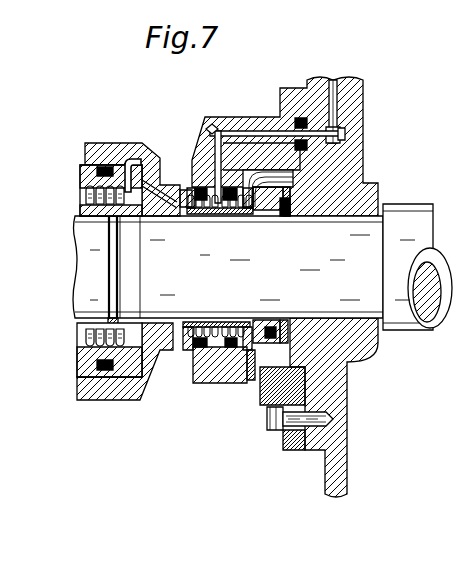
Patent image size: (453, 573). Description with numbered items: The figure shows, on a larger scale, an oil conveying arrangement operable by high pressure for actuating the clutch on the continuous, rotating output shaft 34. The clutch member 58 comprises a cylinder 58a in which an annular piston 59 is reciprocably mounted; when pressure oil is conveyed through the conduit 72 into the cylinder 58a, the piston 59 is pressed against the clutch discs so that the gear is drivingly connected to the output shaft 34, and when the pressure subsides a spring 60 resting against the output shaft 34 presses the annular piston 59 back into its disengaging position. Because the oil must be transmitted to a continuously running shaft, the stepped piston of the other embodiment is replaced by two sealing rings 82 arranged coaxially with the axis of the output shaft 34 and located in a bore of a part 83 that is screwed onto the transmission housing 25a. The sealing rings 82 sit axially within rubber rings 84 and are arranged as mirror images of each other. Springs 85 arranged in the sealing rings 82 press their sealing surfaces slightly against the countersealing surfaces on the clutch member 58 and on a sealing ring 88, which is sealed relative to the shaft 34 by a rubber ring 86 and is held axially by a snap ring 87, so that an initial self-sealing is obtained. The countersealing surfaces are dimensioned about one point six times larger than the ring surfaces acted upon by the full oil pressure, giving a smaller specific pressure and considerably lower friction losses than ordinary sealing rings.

The output shaft 34 is at (212, 285).
The transmission housing 25a is at (356, 103).
The conduit 72 is at (333, 78).
The rubber rings 84 is at (212, 165).
The annular piston 59 is at (122, 166).
The cylinder 58a is at (140, 163).
The clutch member 58 is at (125, 390).
The spring 60 is at (100, 349).
The springs 85 is at (208, 211).
The sealing ring 88 is at (250, 211).
The snap ring 87 is at (291, 215).
The rubber ring 86 is at (263, 324).
The sealing rings 82 is at (186, 352).
The part 83 is at (215, 362).